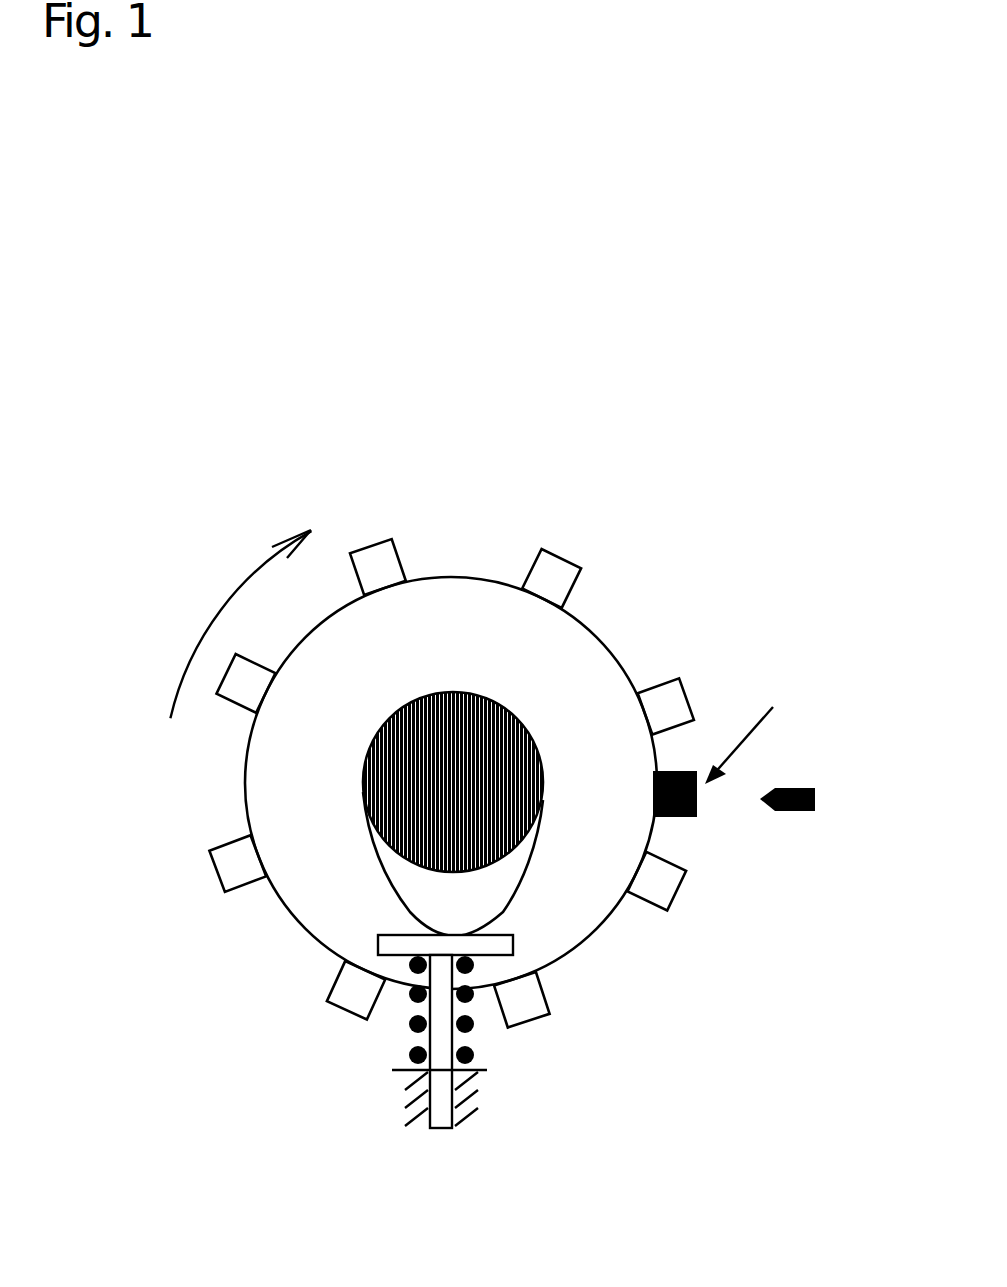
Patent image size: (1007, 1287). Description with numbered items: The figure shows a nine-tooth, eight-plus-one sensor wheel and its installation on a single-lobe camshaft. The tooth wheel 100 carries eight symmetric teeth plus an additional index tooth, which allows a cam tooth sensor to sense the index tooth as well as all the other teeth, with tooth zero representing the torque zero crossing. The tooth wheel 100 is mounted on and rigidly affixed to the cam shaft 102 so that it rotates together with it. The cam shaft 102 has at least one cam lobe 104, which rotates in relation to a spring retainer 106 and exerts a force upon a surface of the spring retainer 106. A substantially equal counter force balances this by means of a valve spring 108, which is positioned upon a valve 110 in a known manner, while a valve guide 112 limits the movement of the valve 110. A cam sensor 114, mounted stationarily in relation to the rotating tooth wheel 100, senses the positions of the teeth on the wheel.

The tooth wheel 100 is at (452, 646).
The cam shaft 102 is at (474, 799).
The cam lobe 104 is at (472, 916).
The spring retainer 106 is at (385, 944).
The valve spring 108 is at (417, 1005).
The valve 110 is at (438, 1127).
The valve guide 112 is at (472, 1093).
The cam sensor 114 is at (813, 793).